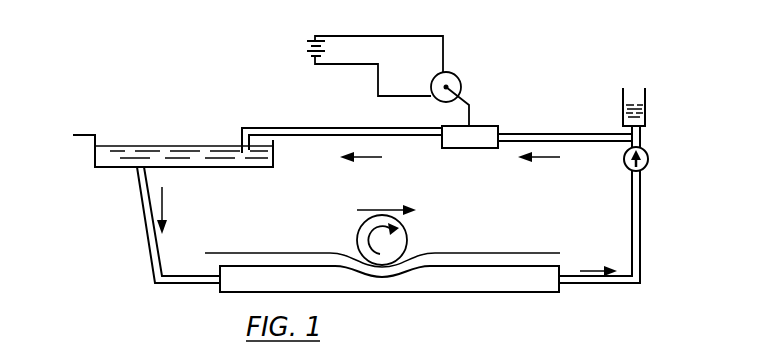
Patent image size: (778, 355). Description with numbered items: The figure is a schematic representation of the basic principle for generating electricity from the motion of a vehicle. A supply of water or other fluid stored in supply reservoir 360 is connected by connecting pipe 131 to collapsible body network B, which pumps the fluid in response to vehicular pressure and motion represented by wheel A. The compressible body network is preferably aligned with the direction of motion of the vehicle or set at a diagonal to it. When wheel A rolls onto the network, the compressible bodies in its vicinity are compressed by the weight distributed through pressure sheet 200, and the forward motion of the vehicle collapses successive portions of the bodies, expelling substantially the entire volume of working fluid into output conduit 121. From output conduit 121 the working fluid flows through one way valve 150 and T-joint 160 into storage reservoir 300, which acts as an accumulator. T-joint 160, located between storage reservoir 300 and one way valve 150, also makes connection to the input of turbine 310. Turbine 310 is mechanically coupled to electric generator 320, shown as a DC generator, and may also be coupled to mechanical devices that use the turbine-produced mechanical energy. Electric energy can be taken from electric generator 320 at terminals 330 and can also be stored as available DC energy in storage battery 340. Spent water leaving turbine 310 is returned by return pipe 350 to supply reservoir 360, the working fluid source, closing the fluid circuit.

The supply reservoir 360 is at (93, 162).
The return pipe 350 is at (318, 129).
The storage battery 340 is at (301, 50).
The terminals 330 is at (378, 36).
The electric generator 320 is at (460, 79).
The turbine 310 is at (498, 128).
The storage reservoir 300 is at (648, 110).
The T-joint 160 is at (640, 135).
The one way valve 150 is at (649, 158).
The output conduit 121 is at (640, 240).
The connecting pipe 131 is at (150, 240).
The pressure sheet 200 is at (258, 252).
The wheel A is at (407, 245).
The collapsible body network B is at (427, 298).